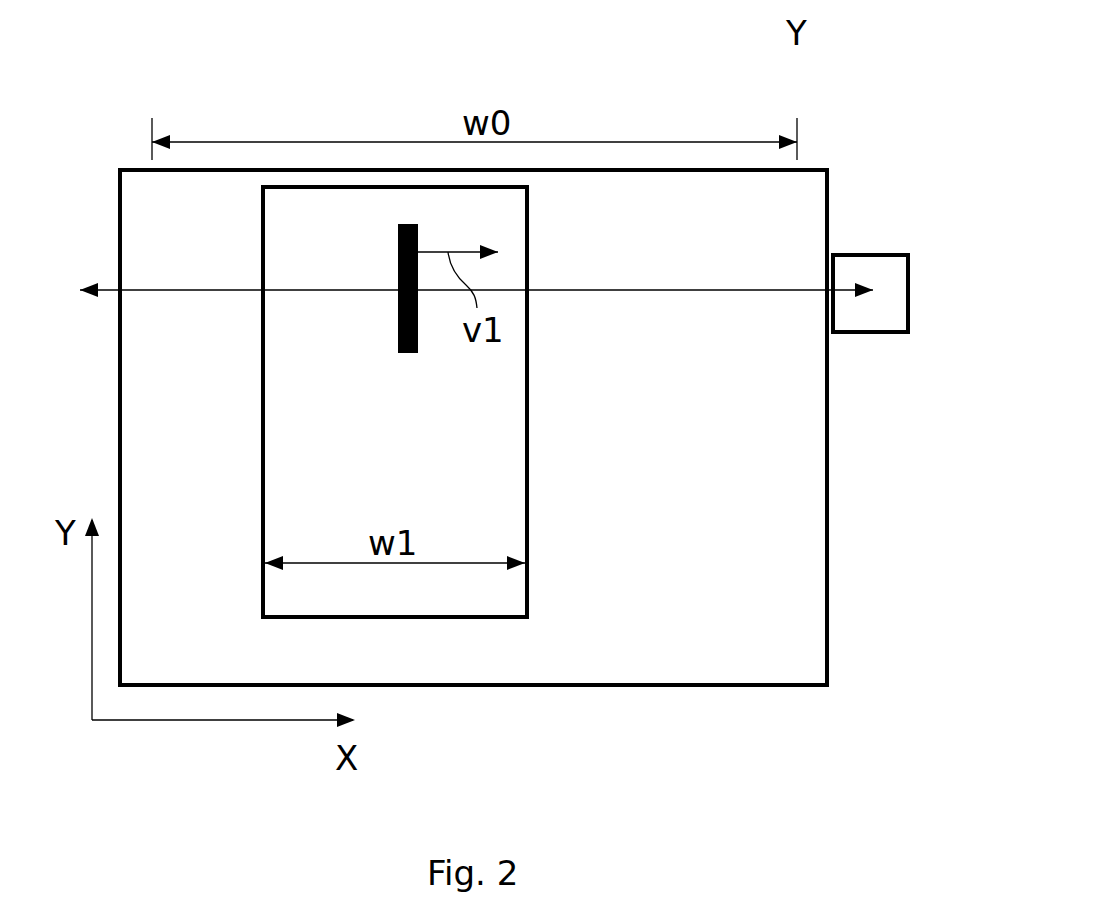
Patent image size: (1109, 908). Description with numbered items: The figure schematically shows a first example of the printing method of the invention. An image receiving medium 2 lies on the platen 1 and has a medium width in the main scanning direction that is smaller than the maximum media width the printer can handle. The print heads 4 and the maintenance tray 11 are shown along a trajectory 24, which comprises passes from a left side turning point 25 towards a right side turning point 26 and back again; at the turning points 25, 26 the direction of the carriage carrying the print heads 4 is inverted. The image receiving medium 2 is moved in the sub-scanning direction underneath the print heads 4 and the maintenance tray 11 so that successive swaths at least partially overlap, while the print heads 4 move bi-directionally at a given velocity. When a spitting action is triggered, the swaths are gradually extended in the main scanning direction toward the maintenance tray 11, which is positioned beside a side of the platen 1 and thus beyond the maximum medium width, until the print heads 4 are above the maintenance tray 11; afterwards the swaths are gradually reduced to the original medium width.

The platen 1 is at (828, 588).
The image receiving medium 2 is at (522, 250).
The print heads 4 is at (398, 333).
The maintenance tray 11 is at (863, 333).
The trajectory 24 is at (665, 290).
The left side turning point 25 is at (82, 291).
The right side turning point 26 is at (868, 292).